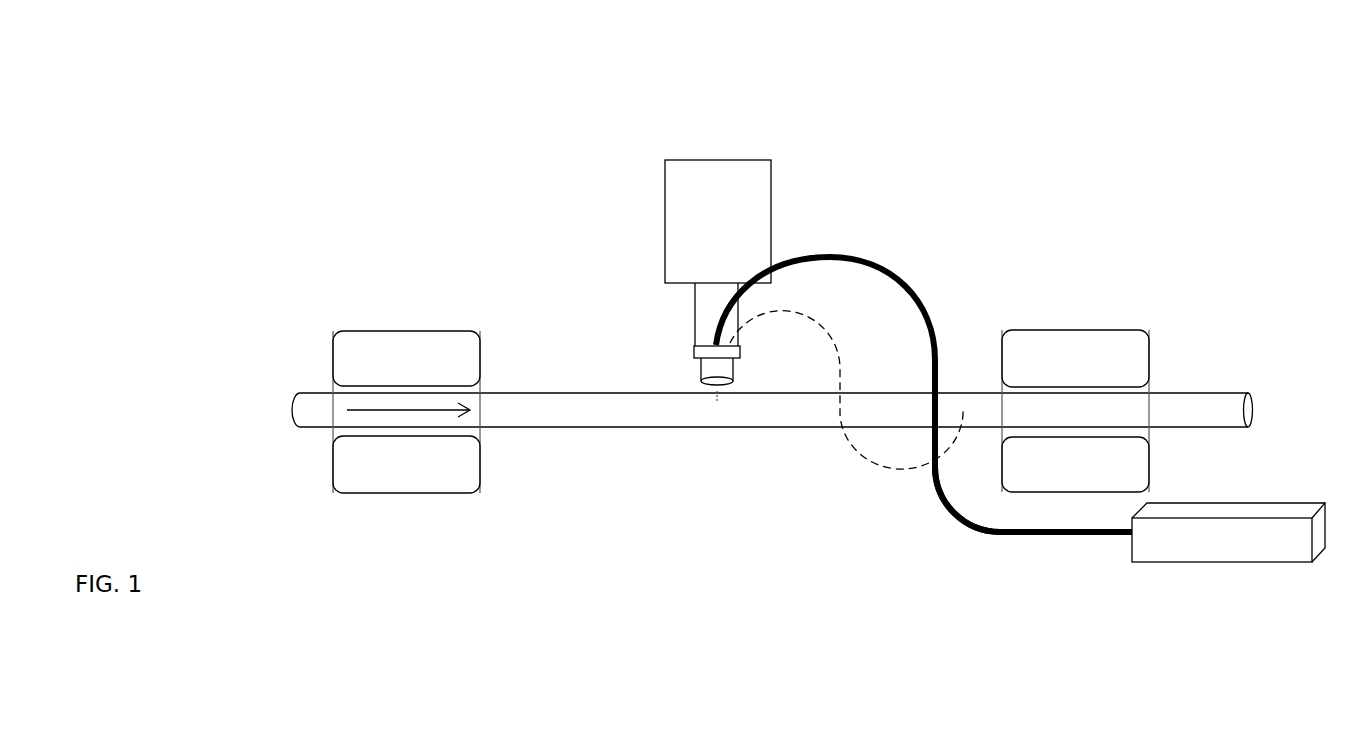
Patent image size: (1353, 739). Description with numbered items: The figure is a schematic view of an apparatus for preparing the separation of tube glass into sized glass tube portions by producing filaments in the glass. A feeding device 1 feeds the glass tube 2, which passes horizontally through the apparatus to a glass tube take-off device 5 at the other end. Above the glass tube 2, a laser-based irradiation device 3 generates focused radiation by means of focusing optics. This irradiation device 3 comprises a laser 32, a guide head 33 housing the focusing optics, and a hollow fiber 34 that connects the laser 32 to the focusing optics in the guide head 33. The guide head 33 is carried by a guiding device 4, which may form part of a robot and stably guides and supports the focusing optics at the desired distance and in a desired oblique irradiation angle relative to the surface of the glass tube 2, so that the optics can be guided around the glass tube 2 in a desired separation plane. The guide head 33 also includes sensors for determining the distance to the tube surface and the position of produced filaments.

The feeding device 1 is at (333, 357).
The glass tube 2 is at (532, 415).
The laser-based irradiation device 3 is at (937, 345).
The guiding device 4 is at (717, 160).
The glass tube take-off device 5 is at (1103, 330).
The laser 32 is at (1172, 547).
The guide head 33 is at (697, 363).
The hollow fiber 34 is at (990, 530).